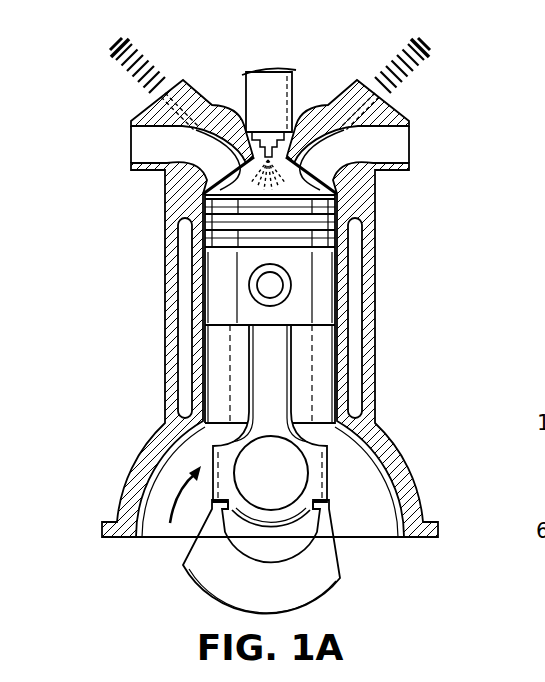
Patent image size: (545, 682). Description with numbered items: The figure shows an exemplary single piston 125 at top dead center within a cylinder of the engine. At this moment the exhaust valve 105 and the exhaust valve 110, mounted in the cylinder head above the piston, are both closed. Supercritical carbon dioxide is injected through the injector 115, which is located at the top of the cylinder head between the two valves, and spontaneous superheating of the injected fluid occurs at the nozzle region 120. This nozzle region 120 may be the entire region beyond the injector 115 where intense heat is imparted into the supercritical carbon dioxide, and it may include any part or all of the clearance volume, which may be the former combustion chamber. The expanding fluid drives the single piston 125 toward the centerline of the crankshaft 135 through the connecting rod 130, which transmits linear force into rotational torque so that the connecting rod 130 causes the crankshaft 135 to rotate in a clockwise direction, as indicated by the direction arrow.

The exhaust valve 105 is at (124, 78).
The exhaust valve 110 is at (420, 78).
The injector 115 is at (297, 90).
The nozzle region 120 is at (248, 133).
The single piston 125 is at (315, 285).
The connecting rod 130 is at (275, 378).
The crankshaft 135 is at (341, 578).